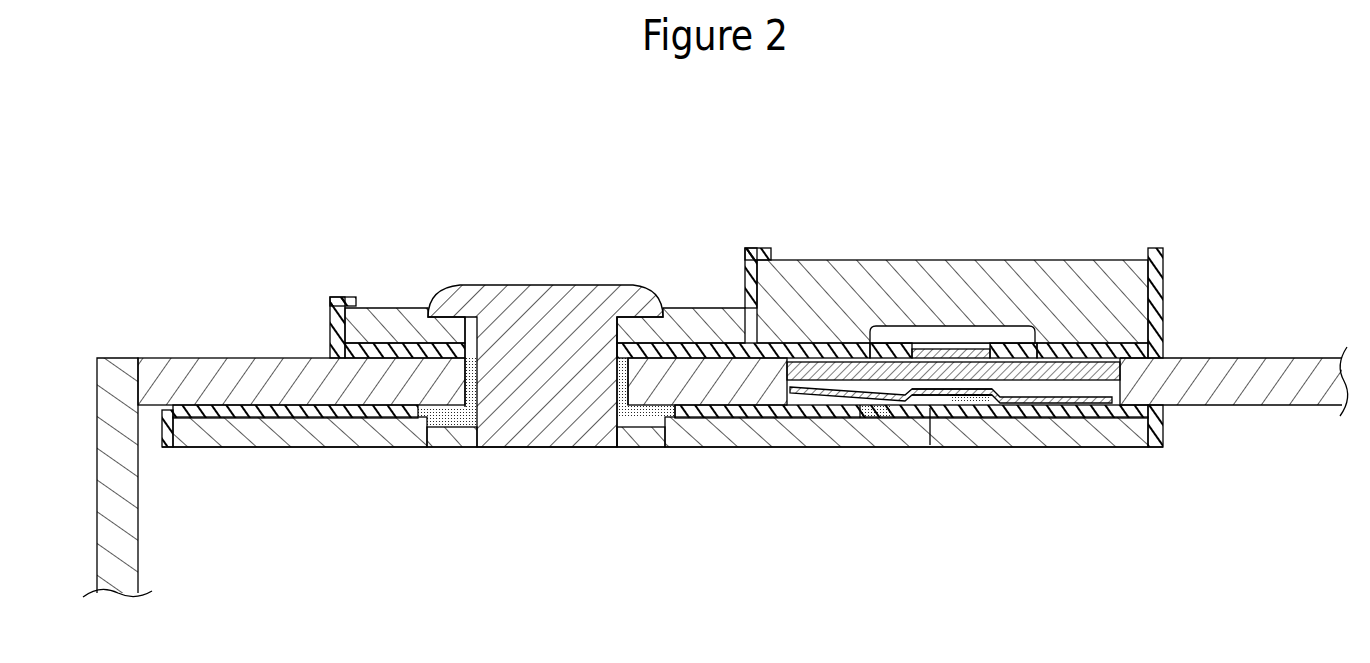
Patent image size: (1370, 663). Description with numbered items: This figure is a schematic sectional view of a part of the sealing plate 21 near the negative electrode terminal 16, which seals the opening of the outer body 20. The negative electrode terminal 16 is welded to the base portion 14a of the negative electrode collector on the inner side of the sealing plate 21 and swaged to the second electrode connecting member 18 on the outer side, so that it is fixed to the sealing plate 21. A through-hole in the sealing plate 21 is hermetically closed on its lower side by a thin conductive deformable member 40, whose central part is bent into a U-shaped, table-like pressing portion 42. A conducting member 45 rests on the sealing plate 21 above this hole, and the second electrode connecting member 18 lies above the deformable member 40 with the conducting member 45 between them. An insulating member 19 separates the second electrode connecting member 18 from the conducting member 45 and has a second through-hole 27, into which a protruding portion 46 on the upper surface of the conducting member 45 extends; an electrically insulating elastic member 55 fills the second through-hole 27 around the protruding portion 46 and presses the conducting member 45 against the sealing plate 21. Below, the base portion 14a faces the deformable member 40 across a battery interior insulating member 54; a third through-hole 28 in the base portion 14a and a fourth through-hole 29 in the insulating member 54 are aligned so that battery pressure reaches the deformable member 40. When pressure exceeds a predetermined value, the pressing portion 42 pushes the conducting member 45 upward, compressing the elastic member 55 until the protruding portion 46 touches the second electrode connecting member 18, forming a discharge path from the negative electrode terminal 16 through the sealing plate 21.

The base portion of the negative electrode collector 14a is at (692, 445).
The negative electrode terminal 16 is at (543, 290).
The second electrode connecting member 18 is at (1030, 262).
The insulating member 19 is at (1072, 348).
The outer body 20 is at (116, 360).
The sealing plate 21 is at (1270, 360).
The second through-hole 27 is at (990, 335).
The third through-hole 28 is at (944, 430).
The fourth through-hole 29 is at (970, 420).
The deformable member 40 is at (1087, 395).
The pressing portion 42 is at (958, 395).
The conducting member 45 is at (1020, 400).
The protruding portion 46 is at (935, 343).
The battery interior insulating member 54 is at (753, 412).
The elastic member 55 is at (872, 413).